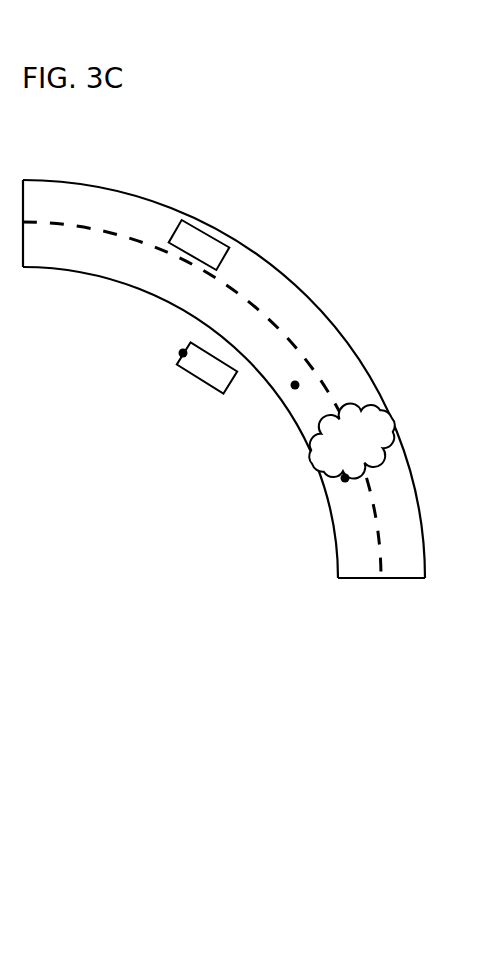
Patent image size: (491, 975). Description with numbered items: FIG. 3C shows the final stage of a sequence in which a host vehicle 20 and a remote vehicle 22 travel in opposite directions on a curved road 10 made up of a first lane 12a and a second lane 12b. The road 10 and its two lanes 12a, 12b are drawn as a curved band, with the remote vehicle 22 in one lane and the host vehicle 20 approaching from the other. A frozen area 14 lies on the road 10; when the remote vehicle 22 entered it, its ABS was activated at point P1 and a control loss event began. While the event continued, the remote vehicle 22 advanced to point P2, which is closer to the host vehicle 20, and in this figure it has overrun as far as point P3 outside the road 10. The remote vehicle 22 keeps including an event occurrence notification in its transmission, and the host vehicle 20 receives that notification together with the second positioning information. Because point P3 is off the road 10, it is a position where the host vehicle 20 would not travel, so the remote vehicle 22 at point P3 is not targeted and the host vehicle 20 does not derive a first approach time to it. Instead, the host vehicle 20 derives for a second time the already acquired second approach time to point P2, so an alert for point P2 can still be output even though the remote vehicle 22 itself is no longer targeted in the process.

The road 10 is at (247, 413).
The first lane 12a is at (402, 565).
The second lane 12b is at (360, 565).
The frozen area 14 is at (359, 405).
The host vehicle 20 is at (210, 236).
The remote vehicle 22 is at (188, 380).
The point P1 is at (339, 492).
The point P2 is at (290, 399).
The point P3 is at (167, 354).